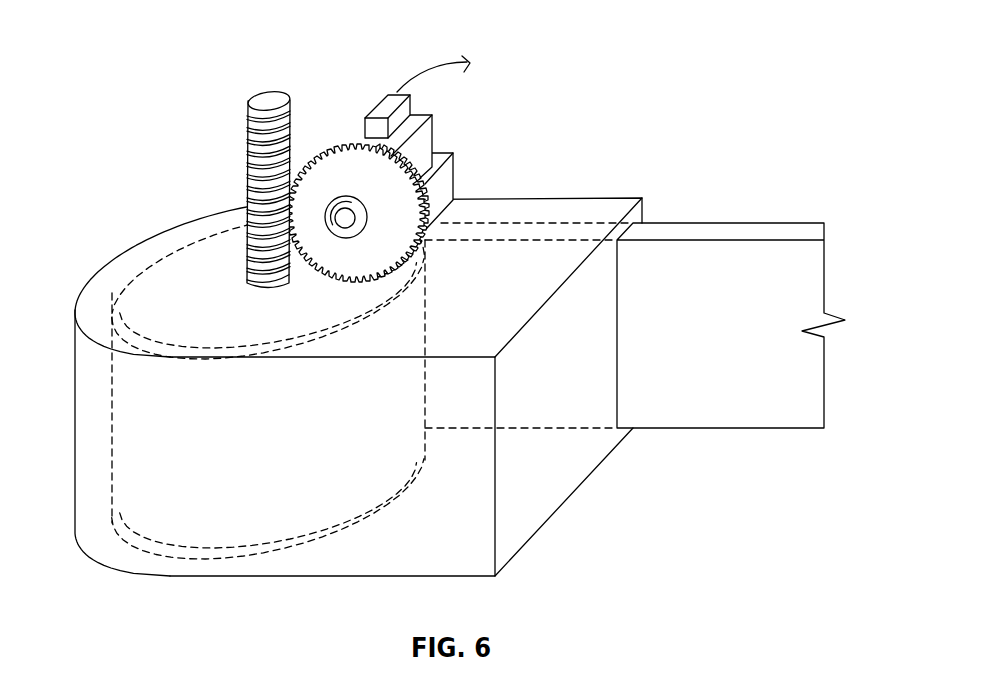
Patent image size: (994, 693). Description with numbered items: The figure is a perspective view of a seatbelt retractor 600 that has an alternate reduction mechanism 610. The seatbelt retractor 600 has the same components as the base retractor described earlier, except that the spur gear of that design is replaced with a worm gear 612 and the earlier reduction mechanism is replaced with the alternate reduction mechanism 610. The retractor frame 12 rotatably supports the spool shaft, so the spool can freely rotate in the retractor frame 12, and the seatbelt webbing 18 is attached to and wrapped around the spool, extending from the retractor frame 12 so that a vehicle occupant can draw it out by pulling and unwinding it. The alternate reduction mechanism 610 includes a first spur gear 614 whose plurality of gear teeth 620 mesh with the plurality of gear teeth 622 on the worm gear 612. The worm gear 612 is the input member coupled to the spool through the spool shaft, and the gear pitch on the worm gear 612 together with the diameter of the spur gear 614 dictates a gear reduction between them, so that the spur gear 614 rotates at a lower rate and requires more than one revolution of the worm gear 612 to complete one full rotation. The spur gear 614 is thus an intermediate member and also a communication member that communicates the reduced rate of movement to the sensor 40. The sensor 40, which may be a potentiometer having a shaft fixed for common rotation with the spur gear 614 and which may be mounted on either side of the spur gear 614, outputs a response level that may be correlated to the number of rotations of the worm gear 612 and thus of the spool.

The seatbelt retractor 600 is at (138, 68).
The retractor frame 12 is at (562, 506).
The seatbelt webbing 18 is at (733, 238).
The sensor 40 is at (434, 141).
The first spur gear 614 is at (454, 184).
The gear teeth 620 is at (365, 118).
The alternate reduction mechanism 610 is at (305, 121).
The worm gear 612 is at (247, 143).
The gear teeth 622 is at (247, 180).